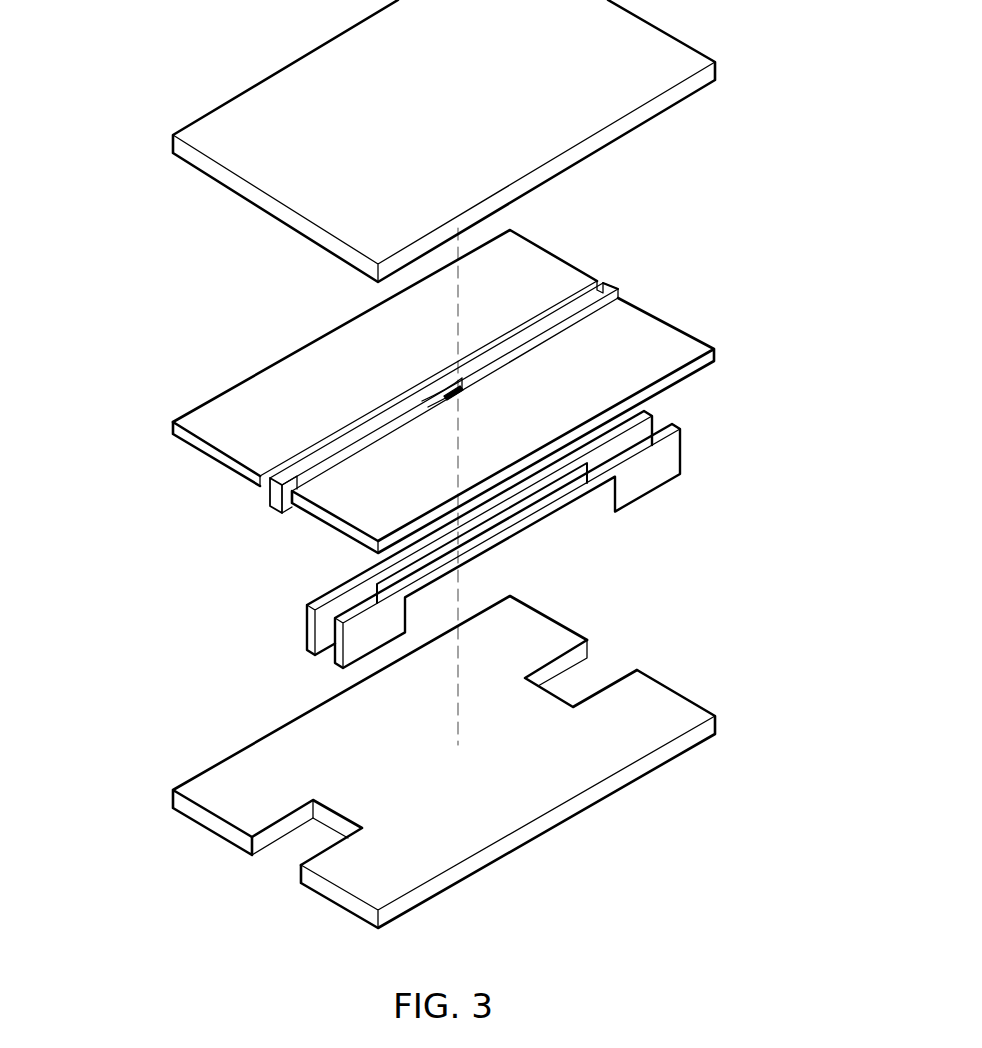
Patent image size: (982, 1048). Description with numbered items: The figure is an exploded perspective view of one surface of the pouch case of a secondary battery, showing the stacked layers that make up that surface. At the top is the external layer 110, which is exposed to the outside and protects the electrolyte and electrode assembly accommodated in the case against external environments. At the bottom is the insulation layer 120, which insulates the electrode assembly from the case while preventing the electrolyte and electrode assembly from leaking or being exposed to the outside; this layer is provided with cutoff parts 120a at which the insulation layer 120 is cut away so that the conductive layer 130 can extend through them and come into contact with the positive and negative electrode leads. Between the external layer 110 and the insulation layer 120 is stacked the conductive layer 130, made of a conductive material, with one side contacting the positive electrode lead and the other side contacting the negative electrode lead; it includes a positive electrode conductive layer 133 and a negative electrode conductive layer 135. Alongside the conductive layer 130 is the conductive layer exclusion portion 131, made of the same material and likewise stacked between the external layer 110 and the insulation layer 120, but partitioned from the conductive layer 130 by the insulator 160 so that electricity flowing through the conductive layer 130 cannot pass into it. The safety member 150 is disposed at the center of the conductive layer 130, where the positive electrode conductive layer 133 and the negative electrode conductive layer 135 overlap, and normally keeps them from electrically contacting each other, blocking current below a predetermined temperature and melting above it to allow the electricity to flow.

The external layer 110 is at (213, 112).
The insulation layer 120 is at (444, 753).
The cutoff part 120a is at (333, 815).
The conductive layer 130 is at (443, 421).
The conductive layer exclusion portion 131 is at (213, 398).
The positive electrode conductive layer 133 is at (268, 499).
The negative electrode conductive layer 135 is at (607, 287).
The safety member 150 is at (460, 394).
The insulator 160 is at (682, 450).